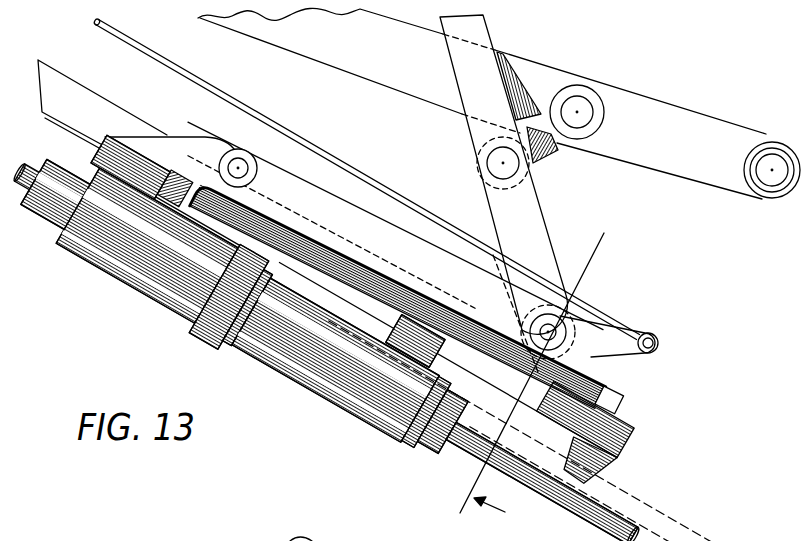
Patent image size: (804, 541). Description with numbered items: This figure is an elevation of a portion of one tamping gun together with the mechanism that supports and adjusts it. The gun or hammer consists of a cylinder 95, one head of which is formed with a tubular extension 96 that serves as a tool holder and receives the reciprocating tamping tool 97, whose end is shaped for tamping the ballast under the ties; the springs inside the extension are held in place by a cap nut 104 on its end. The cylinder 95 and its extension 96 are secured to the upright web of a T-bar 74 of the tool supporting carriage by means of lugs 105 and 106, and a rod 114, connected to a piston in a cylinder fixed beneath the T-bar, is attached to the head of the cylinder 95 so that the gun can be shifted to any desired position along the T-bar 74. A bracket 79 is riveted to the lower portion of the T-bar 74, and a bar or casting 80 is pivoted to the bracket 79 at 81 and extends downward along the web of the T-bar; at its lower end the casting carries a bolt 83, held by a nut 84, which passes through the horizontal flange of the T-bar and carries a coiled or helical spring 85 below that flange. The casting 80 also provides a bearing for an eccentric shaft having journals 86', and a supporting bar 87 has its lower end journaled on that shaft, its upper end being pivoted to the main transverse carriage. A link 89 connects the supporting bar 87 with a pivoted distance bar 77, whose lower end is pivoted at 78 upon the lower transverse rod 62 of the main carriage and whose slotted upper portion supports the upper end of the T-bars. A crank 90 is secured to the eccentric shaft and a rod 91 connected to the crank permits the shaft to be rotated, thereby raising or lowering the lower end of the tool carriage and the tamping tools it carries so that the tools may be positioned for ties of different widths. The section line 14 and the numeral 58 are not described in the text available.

The section line 14- 14 is at (538, 376).
The lever 58 is at (333, 538).
The lower transverse rod 62 is at (773, 172).
The T-bar 74 is at (68, 82).
The distance bar 77 is at (671, 103).
The pivot 78 is at (757, 200).
The bracket 79 is at (203, 148).
The bar or casting 80 is at (336, 203).
The pivot 81 is at (245, 158).
The bolt 83 is at (607, 432).
The nut 84 is at (620, 403).
The coiled or helical spring 85 is at (586, 470).
The journal 86' is at (520, 323).
The supporting bar 87 is at (541, 190).
The link 89 is at (563, 150).
The crank 90 is at (614, 337).
The rod 91 is at (170, 67).
The cylinder 95 is at (147, 283).
The tubular extension 96 is at (323, 380).
The tamping tool 97 is at (564, 493).
The cap nut 104 is at (423, 440).
The lug 105 is at (128, 150).
The lug 106 is at (420, 327).
The rod 114 is at (30, 167).